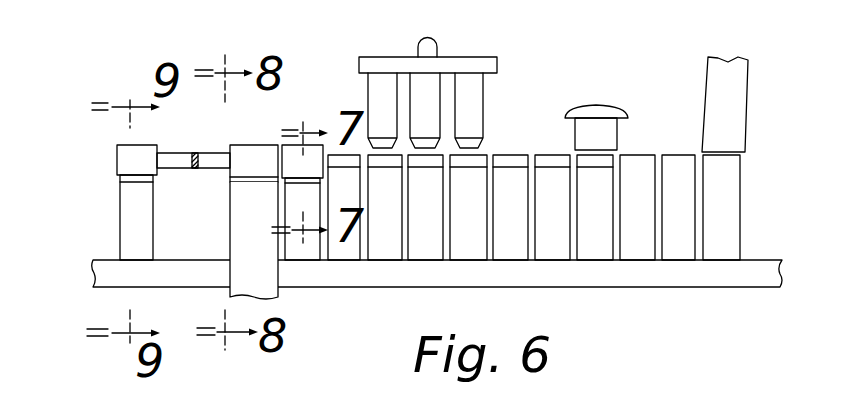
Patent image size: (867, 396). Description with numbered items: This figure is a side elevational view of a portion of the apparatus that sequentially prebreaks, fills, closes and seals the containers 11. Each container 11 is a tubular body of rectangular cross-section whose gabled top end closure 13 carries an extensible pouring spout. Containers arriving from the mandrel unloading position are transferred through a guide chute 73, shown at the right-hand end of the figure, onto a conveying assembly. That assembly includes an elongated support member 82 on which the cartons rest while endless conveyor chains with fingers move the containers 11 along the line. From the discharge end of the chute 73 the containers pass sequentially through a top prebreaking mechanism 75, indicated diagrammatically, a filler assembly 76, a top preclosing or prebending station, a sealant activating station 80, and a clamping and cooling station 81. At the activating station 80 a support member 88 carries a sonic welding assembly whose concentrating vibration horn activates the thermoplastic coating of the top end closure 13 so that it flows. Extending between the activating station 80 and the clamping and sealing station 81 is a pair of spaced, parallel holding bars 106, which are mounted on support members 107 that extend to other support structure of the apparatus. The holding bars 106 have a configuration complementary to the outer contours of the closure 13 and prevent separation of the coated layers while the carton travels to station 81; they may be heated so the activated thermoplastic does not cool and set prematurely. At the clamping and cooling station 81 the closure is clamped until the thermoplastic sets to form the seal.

The container 11 is at (749, 196).
The top end closure 13 is at (627, 152).
The guide chute 73 is at (733, 115).
The top prebreaking mechanism 75 is at (607, 118).
The filler assembly 76 is at (467, 65).
The sealant activating station 80 is at (263, 138).
The clamping and cooling station 81 is at (110, 163).
The elongated support member 82 is at (743, 278).
The support member 88 is at (245, 222).
The holding bars 106 is at (217, 157).
The support members 107 is at (195, 168).